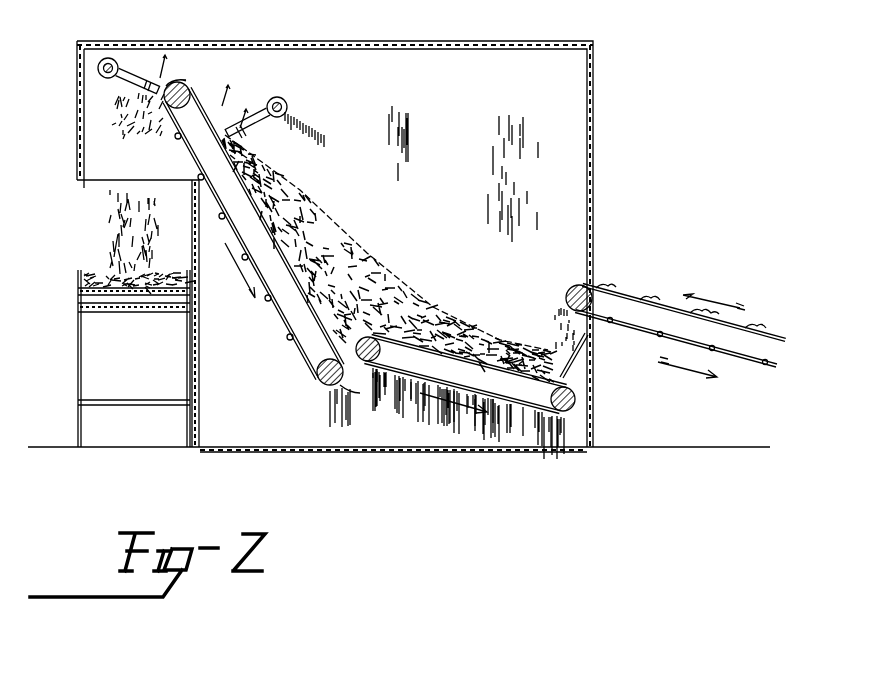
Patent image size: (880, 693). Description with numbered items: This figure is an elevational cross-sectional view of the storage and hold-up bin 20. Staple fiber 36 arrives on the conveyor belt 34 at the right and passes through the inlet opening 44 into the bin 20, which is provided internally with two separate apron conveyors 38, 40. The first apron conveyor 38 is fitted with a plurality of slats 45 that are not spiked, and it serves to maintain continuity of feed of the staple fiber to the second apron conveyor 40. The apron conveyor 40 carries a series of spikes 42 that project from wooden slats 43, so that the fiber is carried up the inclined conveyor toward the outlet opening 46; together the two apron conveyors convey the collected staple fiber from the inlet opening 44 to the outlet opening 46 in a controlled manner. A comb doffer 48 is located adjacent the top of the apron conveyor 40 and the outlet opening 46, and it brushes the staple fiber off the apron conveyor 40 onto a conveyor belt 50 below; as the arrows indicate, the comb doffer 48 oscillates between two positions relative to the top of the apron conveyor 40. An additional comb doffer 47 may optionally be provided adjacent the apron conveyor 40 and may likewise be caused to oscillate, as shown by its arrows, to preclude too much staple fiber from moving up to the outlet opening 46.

The storage and hold-up bin 20 is at (375, 39).
The conveyor belt 34 is at (746, 367).
The staple fiber 36 is at (646, 297).
The first apron conveyor 38 is at (543, 365).
The second apron conveyor 40 is at (317, 372).
The spikes 42 is at (288, 336).
The wooden slats 43 is at (184, 140).
The inlet opening 44 is at (599, 272).
The slats 45 is at (355, 398).
The outlet opening 46 is at (108, 180).
The additional comb doffer 47 is at (260, 91).
The comb doffer 48 is at (134, 80).
The conveyor belt 50 is at (134, 315).